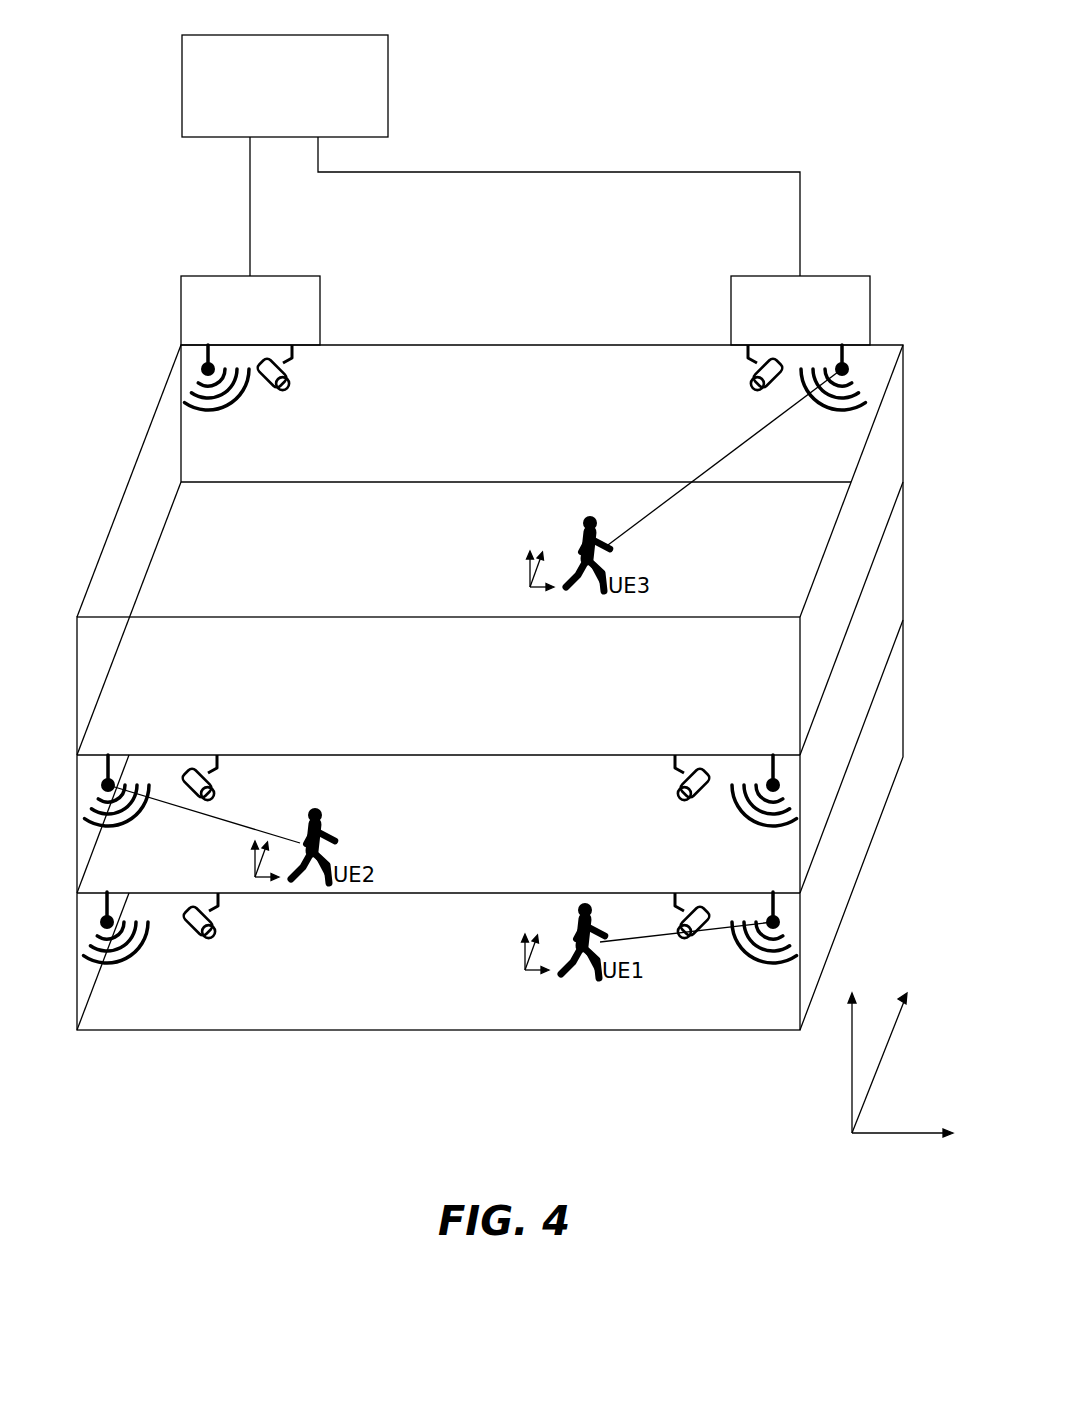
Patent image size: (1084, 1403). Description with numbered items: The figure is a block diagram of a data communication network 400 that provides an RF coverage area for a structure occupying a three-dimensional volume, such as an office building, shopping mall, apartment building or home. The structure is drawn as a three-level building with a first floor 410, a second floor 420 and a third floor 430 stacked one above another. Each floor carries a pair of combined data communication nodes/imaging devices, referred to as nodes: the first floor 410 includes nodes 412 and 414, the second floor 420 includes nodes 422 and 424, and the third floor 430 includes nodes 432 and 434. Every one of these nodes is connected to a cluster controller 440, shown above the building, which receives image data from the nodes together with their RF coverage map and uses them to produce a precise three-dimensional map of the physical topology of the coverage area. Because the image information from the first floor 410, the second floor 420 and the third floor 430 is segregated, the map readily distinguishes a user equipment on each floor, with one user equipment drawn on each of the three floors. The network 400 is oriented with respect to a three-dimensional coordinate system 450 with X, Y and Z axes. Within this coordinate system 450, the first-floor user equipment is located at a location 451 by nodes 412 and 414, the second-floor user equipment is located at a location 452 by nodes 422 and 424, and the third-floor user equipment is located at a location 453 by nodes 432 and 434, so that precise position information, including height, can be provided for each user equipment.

The data communication network 400 is at (473, 777).
The first floor 410 is at (281, 961).
The data communication node/imaging device 412 is at (144, 952).
The data communication node/imaging device 414 is at (738, 952).
The second floor 420 is at (490, 756).
The data communication node/imaging device 422 is at (144, 813).
The data communication node/imaging device 424 is at (738, 816).
The third floor 430 is at (490, 618).
The data communication node/imaging device 432 is at (192, 276).
The data communication node/imaging device 434 is at (858, 276).
The cluster controller 440 is at (192, 35).
The 3D coordinate system 450 is at (896, 1069).
The location 451 is at (521, 954).
The location 452 is at (251, 861).
The location 453 is at (526, 571).